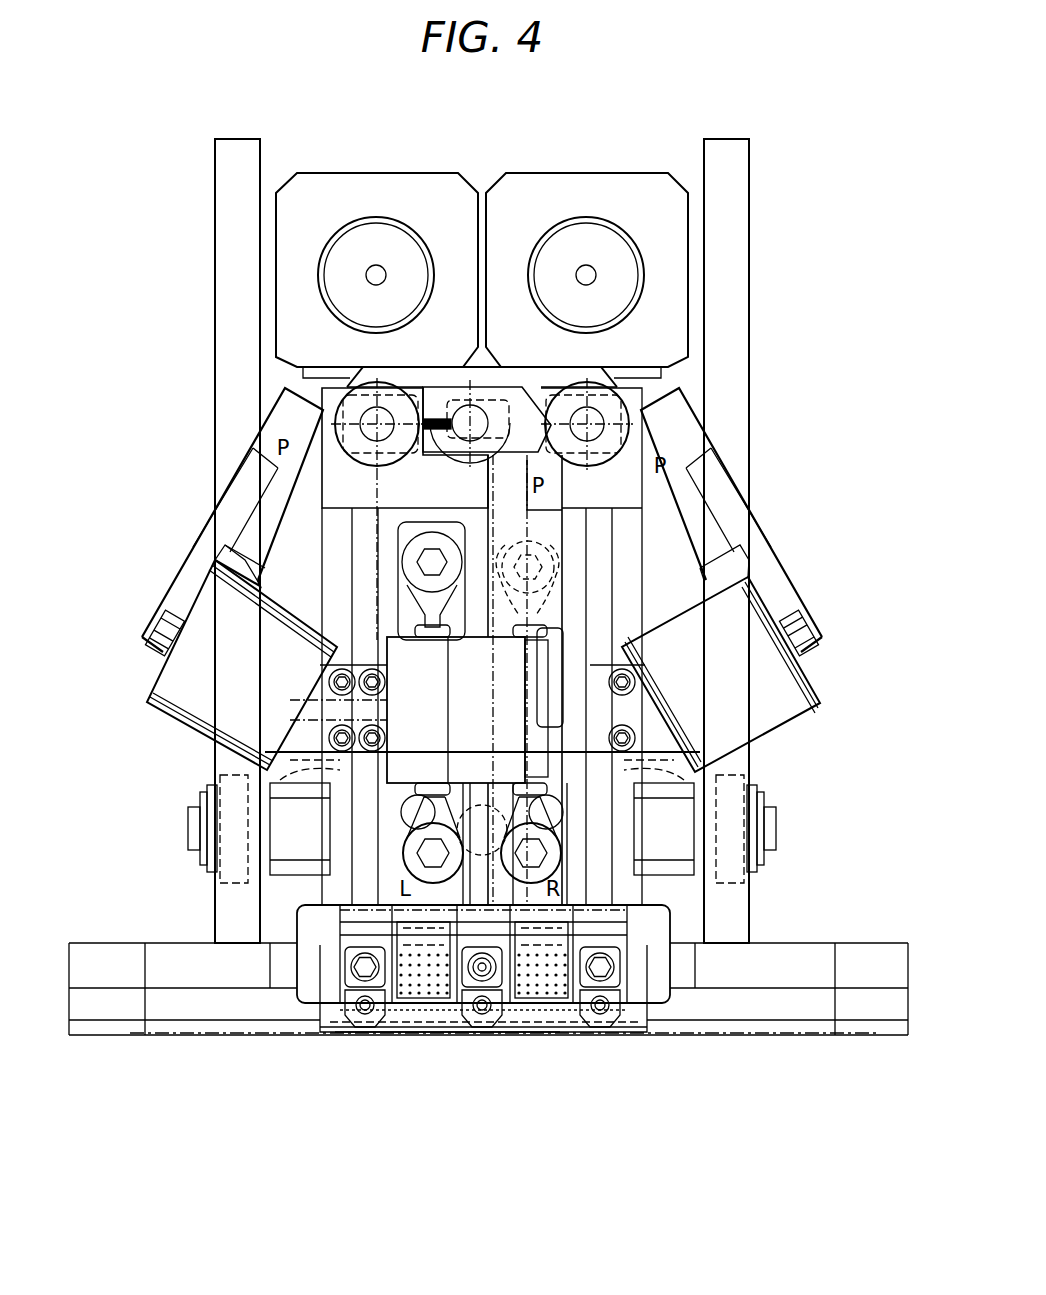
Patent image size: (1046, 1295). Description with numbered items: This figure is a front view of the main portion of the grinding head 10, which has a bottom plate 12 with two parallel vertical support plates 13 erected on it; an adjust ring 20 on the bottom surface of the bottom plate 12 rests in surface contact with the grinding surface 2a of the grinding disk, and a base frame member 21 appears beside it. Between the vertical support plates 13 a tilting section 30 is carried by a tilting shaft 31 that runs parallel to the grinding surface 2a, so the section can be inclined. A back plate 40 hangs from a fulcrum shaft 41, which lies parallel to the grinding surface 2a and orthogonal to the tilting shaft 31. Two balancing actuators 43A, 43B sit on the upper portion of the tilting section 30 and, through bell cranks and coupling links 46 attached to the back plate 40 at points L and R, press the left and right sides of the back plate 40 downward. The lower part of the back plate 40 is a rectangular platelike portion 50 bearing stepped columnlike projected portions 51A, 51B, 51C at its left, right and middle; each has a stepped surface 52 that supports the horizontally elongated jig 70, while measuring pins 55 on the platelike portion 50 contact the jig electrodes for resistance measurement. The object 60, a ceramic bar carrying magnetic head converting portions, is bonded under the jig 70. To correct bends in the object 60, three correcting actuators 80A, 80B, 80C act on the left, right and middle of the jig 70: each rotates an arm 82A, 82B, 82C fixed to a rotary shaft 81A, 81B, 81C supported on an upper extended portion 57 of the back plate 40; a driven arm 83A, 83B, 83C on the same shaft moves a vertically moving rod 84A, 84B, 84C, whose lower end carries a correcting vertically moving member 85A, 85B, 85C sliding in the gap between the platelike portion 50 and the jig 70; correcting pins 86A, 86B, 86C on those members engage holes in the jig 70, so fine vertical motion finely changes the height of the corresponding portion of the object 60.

The grinding head 10 is at (201, 253).
The bottom plate 12 is at (810, 944).
The vertical support plates 13 is at (218, 194).
The adjust ring 20 is at (103, 1050).
The base frame member 21 is at (108, 990).
The grinding surface 2a is at (774, 1038).
The tilting section 30 is at (705, 520).
The tilting shaft 31 is at (186, 830).
The back plate 40 is at (562, 870).
The fulcrum shaft 41 is at (405, 870).
The balancing actuator 43A is at (378, 173).
The balancing actuator 43B is at (576, 183).
The coupling links 46 is at (282, 768).
The rectangular platelike portion 50 is at (296, 966).
The stepped columnlike projected portion 51A is at (366, 1010).
The stepped columnlike projected portion 51B is at (602, 1011).
The stepped columnlike projected portion 51C is at (491, 996).
The stepped surface 52 is at (358, 983).
The measuring pins 55 is at (420, 1022).
The upper extended portion 57 is at (600, 374).
The object 60 is at (427, 1050).
The horizontally elongated jig 70 is at (330, 1025).
The correcting actuator 80A is at (183, 706).
The correcting actuator 80B is at (768, 720).
The correcting actuator 80C is at (370, 682).
The rotary shaft 81A is at (350, 397).
The rotary shaft 81B is at (606, 420).
The rotary shaft 81C is at (464, 405).
The arm 82A is at (230, 546).
The arm 82B is at (748, 555).
The arm 82C is at (492, 490).
The driven arm 83A is at (306, 394).
The driven arm 83B is at (632, 406).
The driven arm 83C is at (534, 410).
The vertically moving rod 84A is at (292, 575).
The vertically moving rod 84B is at (660, 604).
The vertically moving rod 84C is at (312, 641).
The correcting vertically moving member 85A is at (325, 923).
The correcting vertically moving member 85B is at (640, 962).
The correcting vertically moving member 85C is at (482, 1021).
The correcting pin 86A is at (414, 1001).
The correcting pin 86B is at (577, 1001).
The correcting pin 86C is at (514, 1015).